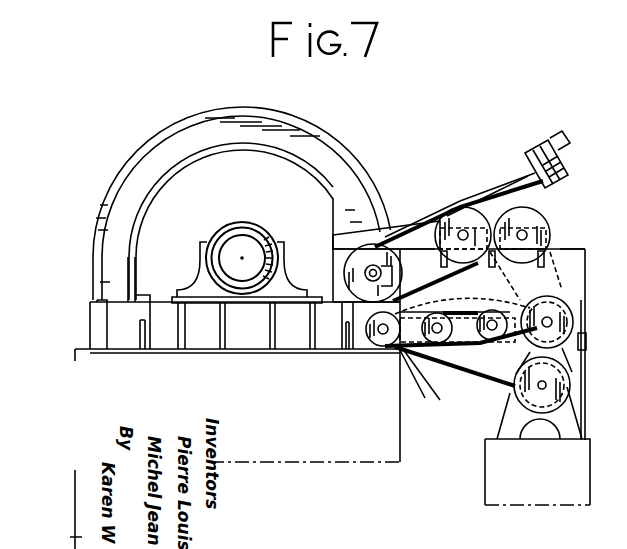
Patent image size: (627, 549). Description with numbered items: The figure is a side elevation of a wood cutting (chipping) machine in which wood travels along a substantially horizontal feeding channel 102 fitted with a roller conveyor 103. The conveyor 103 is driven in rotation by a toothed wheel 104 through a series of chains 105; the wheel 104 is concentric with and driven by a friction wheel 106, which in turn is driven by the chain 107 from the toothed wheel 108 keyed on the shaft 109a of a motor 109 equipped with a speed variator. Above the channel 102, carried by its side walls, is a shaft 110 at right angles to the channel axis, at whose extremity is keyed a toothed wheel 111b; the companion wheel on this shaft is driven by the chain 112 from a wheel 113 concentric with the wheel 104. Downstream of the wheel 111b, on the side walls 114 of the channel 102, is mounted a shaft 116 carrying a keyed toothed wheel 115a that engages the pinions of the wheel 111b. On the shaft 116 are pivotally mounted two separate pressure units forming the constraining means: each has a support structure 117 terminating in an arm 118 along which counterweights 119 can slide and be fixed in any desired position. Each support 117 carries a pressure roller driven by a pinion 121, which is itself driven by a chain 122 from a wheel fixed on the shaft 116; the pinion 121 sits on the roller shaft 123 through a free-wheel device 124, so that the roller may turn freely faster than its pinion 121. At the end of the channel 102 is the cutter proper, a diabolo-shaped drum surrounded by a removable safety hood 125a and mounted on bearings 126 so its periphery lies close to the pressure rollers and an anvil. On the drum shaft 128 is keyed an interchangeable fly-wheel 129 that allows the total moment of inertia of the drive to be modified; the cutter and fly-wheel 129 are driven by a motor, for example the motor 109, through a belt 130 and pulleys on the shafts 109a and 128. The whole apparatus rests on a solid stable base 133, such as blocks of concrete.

The wood feeding channel 102 is at (592, 289).
The roller conveyor 103 is at (425, 348).
The toothed wheel 104 is at (570, 308).
The chains 105 is at (465, 312).
The friction wheel 106 is at (570, 325).
The chain 107 is at (570, 350).
The toothed wheel 108 is at (571, 392).
The motor 109 is at (487, 381).
The motor shaft 109a is at (538, 386).
The shaft 110 is at (527, 232).
The toothed wheel 111b is at (530, 217).
The chain 112 is at (547, 252).
The wheel 113 is at (585, 343).
The side walls 114 is at (572, 258).
The toothed wheel 115a is at (481, 220).
The shaft 116 is at (462, 230).
The support structure 117 is at (412, 232).
The arm 118 is at (497, 200).
The counterweights 119 is at (536, 152).
The pinion 121 is at (420, 312).
The chain 122 is at (437, 277).
The shaft 123 is at (380, 272).
The free-wheel device 124 is at (390, 313).
The safety hood 125a is at (322, 140).
The bearings 126 is at (273, 282).
The shaft 128 is at (243, 245).
The fly-wheel 129 is at (352, 152).
The belt 130 is at (515, 352).
The base 133 is at (490, 481).